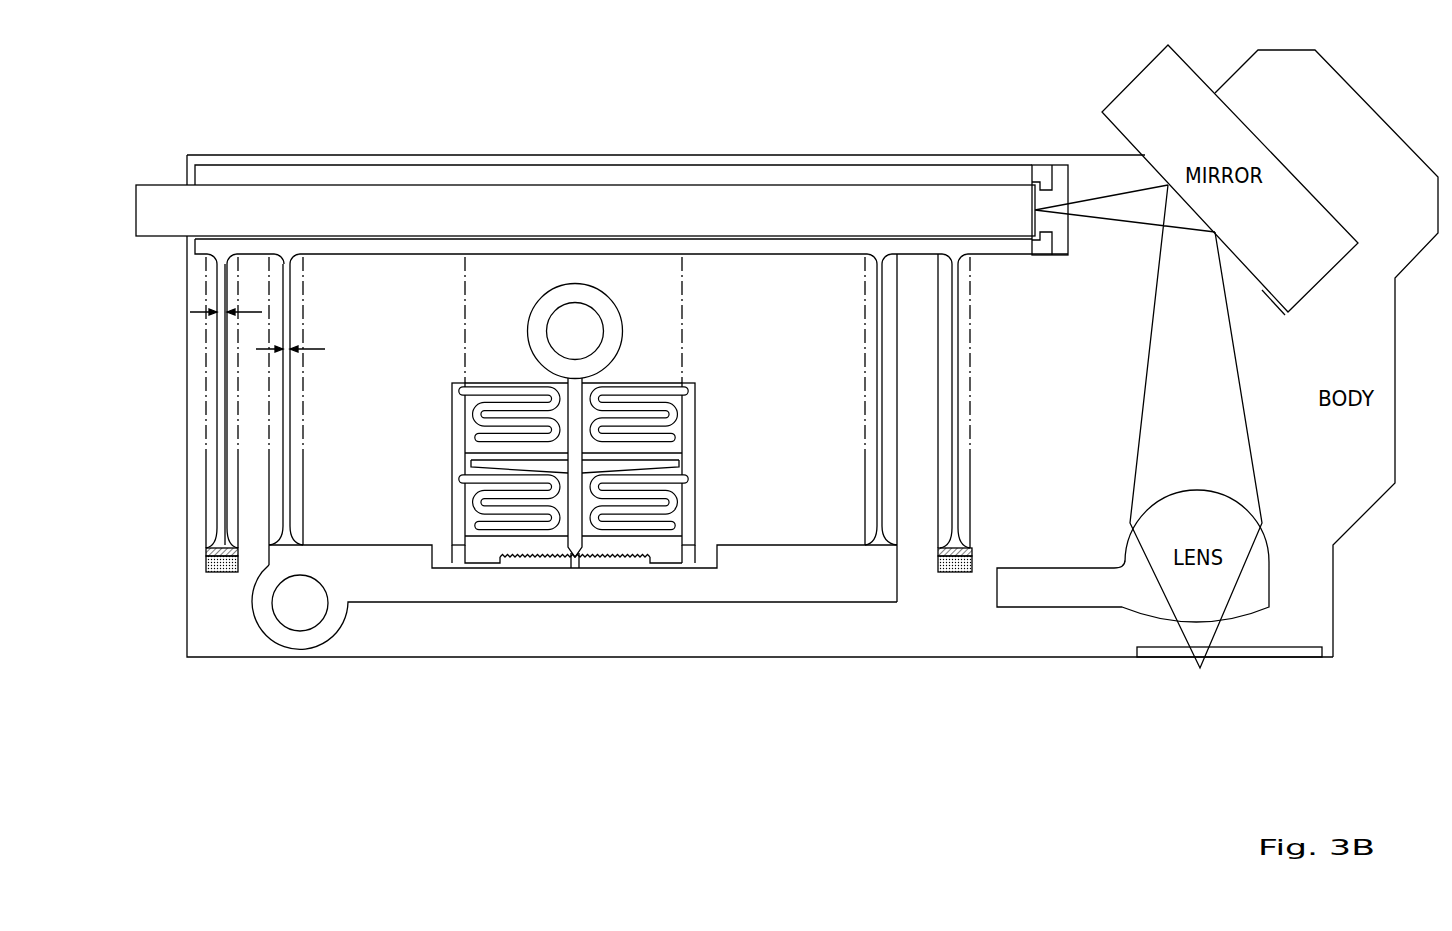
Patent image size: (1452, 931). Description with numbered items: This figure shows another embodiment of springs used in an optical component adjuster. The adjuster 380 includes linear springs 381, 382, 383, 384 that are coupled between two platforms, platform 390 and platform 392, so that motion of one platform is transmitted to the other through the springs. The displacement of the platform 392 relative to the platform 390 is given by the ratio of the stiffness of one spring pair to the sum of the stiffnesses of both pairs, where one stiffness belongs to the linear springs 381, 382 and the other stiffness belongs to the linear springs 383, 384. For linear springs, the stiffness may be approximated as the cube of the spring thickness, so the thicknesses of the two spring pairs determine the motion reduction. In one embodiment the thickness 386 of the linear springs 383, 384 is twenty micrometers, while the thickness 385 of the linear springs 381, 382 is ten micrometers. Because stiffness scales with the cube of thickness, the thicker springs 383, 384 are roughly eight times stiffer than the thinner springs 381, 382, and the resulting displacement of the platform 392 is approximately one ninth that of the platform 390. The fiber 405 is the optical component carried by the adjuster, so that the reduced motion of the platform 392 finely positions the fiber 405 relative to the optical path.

The adjuster 380 is at (437, 629).
The linear spring 381 is at (290, 437).
The linear spring 382 is at (877, 412).
The linear spring 383 is at (217, 410).
The linear spring 384 is at (962, 390).
The thickness 385 is at (318, 346).
The thickness 386 is at (200, 308).
The platform 390 is at (753, 603).
The platform 392 is at (760, 172).
The fiber 405 is at (611, 223).